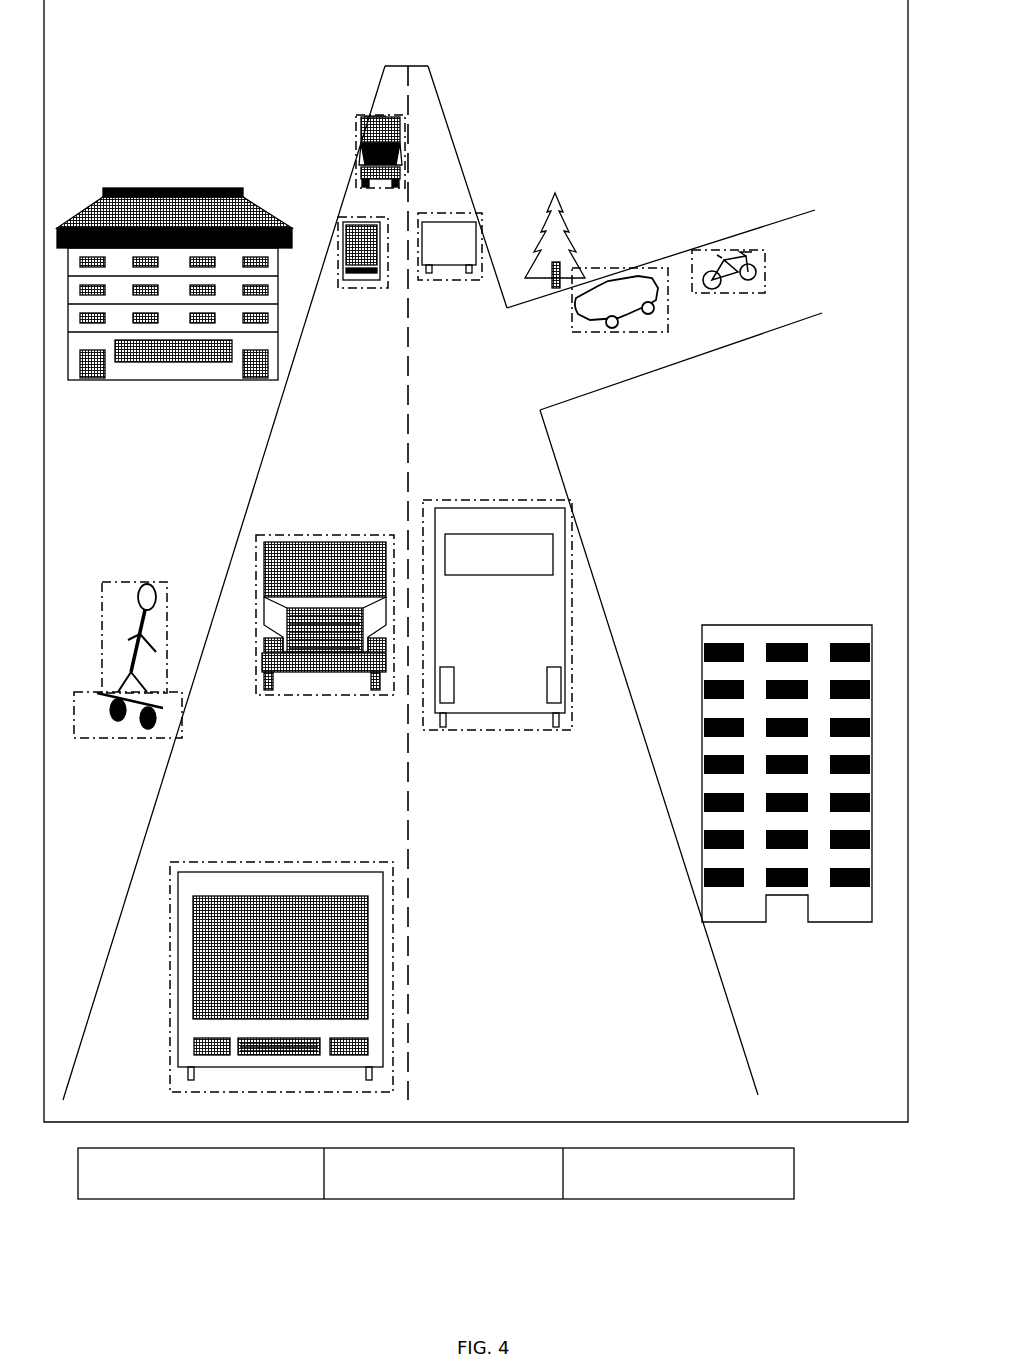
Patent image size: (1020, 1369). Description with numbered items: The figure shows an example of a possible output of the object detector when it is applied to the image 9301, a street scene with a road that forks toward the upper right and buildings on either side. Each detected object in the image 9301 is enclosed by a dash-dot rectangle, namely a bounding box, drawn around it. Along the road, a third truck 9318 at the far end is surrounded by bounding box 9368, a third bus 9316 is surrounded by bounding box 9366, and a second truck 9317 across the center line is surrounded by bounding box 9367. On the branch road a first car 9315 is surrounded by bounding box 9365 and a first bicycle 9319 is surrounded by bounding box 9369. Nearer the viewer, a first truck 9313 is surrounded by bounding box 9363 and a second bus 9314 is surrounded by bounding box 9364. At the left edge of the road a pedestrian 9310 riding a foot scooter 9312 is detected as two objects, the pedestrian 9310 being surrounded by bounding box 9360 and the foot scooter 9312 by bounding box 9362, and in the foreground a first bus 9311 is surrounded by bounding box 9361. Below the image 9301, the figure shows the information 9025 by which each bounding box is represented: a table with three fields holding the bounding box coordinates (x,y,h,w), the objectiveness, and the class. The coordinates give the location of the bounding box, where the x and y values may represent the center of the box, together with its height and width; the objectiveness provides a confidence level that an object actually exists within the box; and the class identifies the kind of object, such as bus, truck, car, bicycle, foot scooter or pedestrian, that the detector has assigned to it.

The image 9301 is at (781, 118).
The information 9025 is at (422, 1248).
The bounding box of truck 9368 is at (360, 113).
The third truck 9318 is at (360, 148).
The bounding box of monitor object 9366 is at (350, 216).
The third bus 9316 is at (372, 290).
The bounding box of box object 9367 is at (433, 282).
The second truck 9317 is at (452, 222).
The bounding box of car 9365 is at (573, 334).
The first car 9315 is at (652, 280).
The bounding box of bicycle 9369 is at (724, 294).
The first bicycle 9319 is at (768, 282).
The bounding box of truck 9363 is at (333, 696).
The first truck 9313 is at (332, 538).
The bounding box of bus 9364 is at (512, 498).
The second bus 9314 is at (578, 506).
The bounding box of person 9360 is at (100, 600).
The pedestrian 9310 is at (158, 580).
The bounding box of skateboard 9362 is at (145, 742).
The foot scooter 9312 is at (108, 726).
The bounding box of television 9361 is at (170, 1010).
The first bus 9311 is at (262, 860).